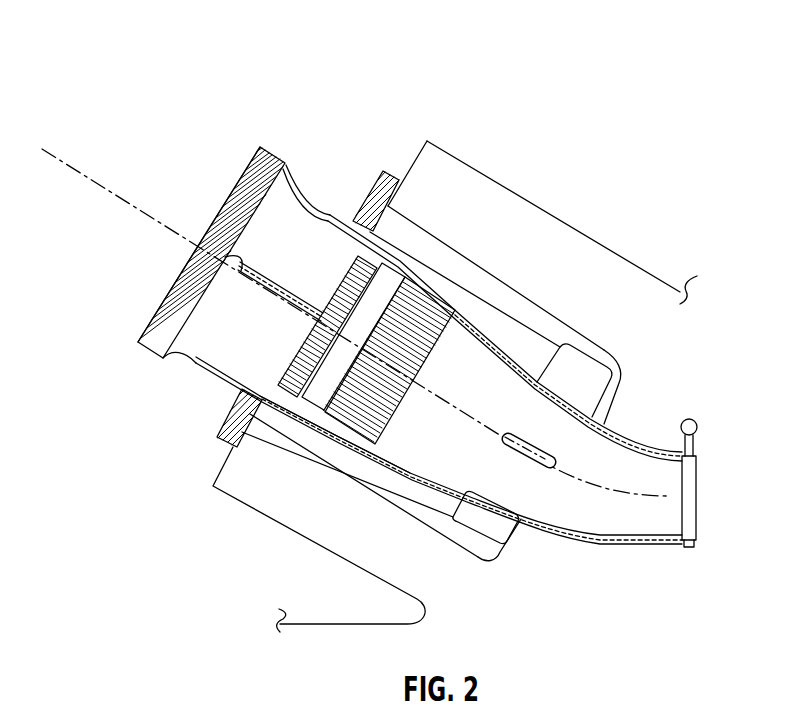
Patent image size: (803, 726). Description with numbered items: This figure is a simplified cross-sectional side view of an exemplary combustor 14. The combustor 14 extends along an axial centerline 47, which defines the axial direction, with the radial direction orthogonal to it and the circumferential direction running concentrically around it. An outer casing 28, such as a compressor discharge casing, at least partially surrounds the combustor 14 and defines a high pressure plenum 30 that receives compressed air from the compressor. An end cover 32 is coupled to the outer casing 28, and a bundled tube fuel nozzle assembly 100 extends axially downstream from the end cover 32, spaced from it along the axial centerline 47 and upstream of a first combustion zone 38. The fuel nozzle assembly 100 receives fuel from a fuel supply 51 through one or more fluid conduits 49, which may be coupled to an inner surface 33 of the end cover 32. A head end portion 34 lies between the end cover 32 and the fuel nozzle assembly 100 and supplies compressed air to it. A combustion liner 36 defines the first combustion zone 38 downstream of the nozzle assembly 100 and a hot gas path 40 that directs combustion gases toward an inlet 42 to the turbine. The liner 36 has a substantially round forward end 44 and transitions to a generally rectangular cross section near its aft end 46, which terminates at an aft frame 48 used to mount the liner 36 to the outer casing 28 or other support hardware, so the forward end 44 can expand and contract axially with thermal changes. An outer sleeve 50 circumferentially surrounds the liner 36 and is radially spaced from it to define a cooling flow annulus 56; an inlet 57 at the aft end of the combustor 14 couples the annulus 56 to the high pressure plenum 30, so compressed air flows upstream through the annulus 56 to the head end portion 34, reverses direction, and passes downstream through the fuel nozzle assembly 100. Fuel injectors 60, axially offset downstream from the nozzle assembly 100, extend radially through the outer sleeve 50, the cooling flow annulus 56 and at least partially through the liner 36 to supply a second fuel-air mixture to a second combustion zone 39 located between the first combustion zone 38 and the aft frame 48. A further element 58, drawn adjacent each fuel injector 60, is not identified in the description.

The combustor 14 is at (310, 98).
The outer casing 28 is at (578, 231).
The high pressure plenum 30 is at (456, 221).
The end cover 32 is at (146, 333).
The inner surface 33 is at (186, 340).
The head end portion 34 is at (316, 222).
The combustion liner 36 is at (620, 540).
The first combustion zone 38 is at (476, 384).
The second combustion zone 39 is at (551, 446).
The hot gas path 40 is at (543, 496).
The inlet 42 is at (724, 511).
The forward end 44 is at (384, 448).
The aft end 46 is at (585, 547).
The axial centerline 47 is at (67, 165).
The aft frame 48 is at (697, 447).
The fluid conduit 49 is at (262, 292).
The outer sleeve 50 is at (607, 421).
The fuel supply 51 is at (215, 203).
The cooling flow annulus 56 is at (618, 428).
The inlet 57 is at (633, 443).
The mounting block 58 is at (577, 360).
The fuel injector 60 is at (551, 366).
The bundled tube fuel nozzle assembly 100 is at (338, 436).